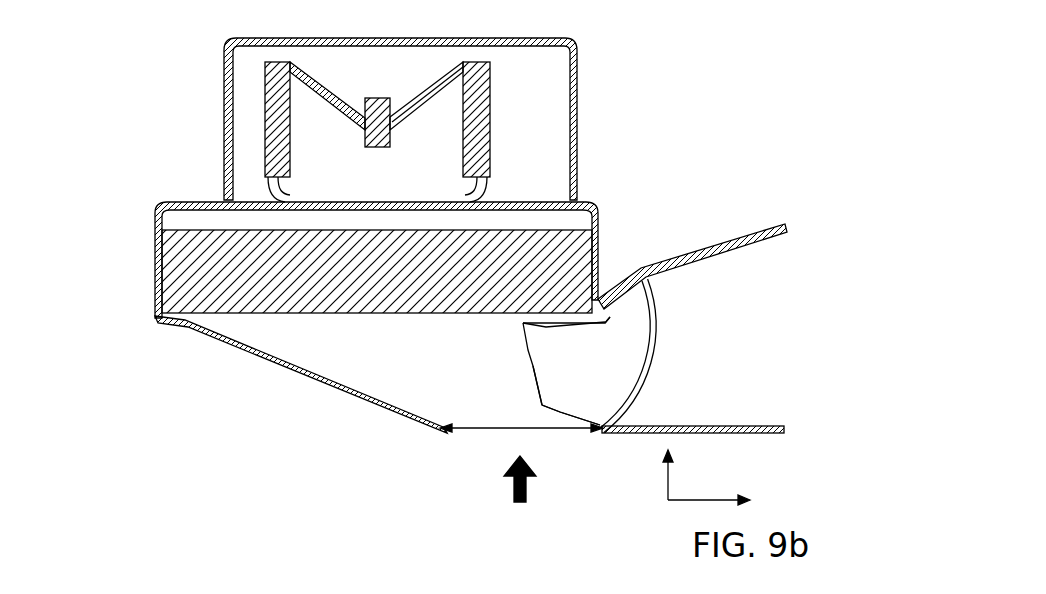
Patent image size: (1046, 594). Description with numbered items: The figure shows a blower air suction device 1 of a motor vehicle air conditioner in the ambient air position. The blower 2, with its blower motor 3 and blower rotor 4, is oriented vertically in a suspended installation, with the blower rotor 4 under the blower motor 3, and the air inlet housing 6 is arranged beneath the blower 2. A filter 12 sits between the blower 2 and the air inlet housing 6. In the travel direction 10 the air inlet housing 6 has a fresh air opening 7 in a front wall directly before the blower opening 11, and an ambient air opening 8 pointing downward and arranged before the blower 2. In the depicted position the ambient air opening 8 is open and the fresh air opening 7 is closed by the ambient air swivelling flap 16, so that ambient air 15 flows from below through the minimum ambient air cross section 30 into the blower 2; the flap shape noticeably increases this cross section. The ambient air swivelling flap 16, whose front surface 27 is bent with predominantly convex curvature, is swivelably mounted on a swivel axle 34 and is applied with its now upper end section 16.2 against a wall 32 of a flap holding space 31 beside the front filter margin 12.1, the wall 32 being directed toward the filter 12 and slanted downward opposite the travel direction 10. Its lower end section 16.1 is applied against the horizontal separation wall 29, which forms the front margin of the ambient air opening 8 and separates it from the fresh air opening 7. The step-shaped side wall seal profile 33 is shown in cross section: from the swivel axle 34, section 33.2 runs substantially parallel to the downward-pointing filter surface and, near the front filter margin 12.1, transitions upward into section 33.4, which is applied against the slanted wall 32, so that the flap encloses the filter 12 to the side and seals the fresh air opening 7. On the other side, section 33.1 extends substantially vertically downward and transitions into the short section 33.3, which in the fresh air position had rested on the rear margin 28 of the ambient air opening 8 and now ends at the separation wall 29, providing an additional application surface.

The blower air suction device 1 is at (117, 88).
The blower 2 is at (345, 40).
The blower motor 3 is at (393, 74).
The blower rotor 4 is at (273, 150).
The air inlet housing 6 is at (342, 351).
The fresh air opening 7 is at (604, 337).
The ambient air opening 8 is at (483, 420).
The travel direction 10 is at (710, 500).
The blower opening 11 is at (383, 212).
The filter 12 is at (252, 258).
The front filter margin 12.1 is at (602, 272).
The ambient air 15 is at (525, 484).
The ambient air swivelling flap 16 is at (641, 372).
The end section of the ambient air swivelling flap 16.1 is at (600, 423).
The end section of the ambient air swivelling flap 16.2 is at (640, 279).
The front surface 27 is at (630, 401).
The rear margin of the ambient air opening 28 is at (441, 430).
The separation wall 29 is at (633, 428).
The minimum ambient air cross section 30 is at (460, 429).
The flap holding space 31 is at (607, 306).
The wall of the flap holding space 32 is at (624, 283).
The side wall seal profile 33 is at (528, 350).
The section of the side wall seal profile 33.1 is at (533, 366).
The section of the side wall seal profile 33.2 is at (546, 327).
The section of the side wall seal profile 33.3 is at (560, 412).
The section of the side wall seal profile 33.4 is at (610, 317).
The swivel axle 34 is at (523, 323).